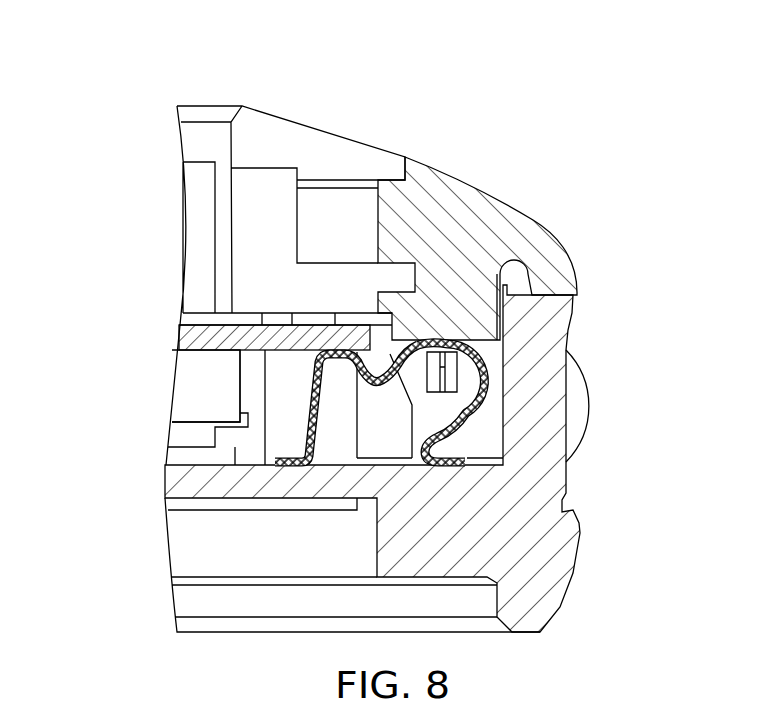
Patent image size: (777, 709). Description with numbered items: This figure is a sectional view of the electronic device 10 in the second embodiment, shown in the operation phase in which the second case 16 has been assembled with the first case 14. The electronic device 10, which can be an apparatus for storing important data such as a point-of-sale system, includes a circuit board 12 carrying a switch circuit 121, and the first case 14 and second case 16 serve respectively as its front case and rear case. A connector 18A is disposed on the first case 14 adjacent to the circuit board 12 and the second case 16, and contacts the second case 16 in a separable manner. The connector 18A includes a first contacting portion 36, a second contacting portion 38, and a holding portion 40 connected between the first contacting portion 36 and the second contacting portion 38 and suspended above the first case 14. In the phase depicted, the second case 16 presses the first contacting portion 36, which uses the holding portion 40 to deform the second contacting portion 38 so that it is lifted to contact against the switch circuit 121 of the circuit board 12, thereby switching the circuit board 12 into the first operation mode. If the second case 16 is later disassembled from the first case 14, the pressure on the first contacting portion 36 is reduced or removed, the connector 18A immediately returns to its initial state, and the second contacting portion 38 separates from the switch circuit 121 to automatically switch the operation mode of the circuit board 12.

The electronic device 10 is at (637, 80).
The circuit board 12 is at (180, 337).
The switch circuit 121 is at (325, 354).
The first case 14 is at (575, 568).
The second case 16 is at (472, 215).
The connector 18A is at (369, 395).
The first contacting portion 36 is at (478, 349).
The second contacting portion 38 is at (325, 357).
The holding portion 40 is at (371, 381).